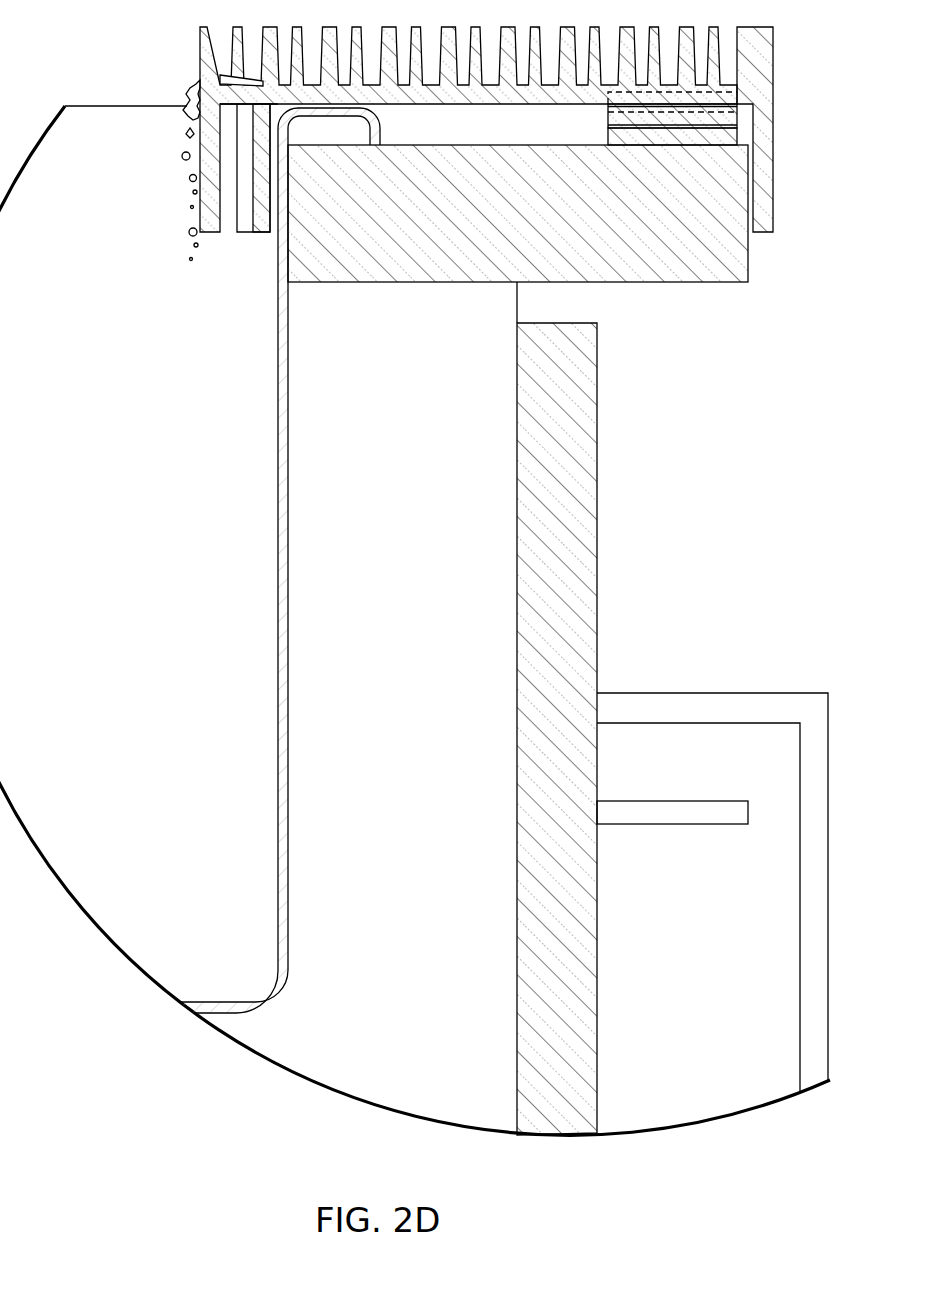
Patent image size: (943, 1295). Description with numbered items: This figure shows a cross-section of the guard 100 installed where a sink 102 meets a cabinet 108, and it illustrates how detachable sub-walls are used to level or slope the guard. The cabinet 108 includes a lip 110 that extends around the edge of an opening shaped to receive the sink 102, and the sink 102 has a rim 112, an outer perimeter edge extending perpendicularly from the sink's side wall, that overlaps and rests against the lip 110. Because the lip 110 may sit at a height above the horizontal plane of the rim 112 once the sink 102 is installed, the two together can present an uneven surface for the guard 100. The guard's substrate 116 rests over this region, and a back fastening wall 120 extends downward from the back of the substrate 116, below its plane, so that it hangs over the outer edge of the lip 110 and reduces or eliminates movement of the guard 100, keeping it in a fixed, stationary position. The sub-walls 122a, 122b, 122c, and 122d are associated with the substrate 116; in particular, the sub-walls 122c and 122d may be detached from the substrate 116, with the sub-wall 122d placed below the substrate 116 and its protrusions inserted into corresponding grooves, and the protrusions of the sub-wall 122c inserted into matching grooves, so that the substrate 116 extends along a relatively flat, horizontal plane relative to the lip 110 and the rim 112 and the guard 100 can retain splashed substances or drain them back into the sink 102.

The guard 100 is at (147, 49).
The sink 102 is at (278, 546).
The cabinet 108 is at (597, 585).
The lip 110 is at (465, 148).
The rim 112 is at (330, 125).
The substrate 116 is at (483, 106).
The back fastening wall 120 is at (768, 165).
The sub-wall 122a is at (207, 213).
The sub-wall 122b is at (255, 233).
The sub-wall 122c is at (737, 137).
The sub-wall 122d is at (737, 113).